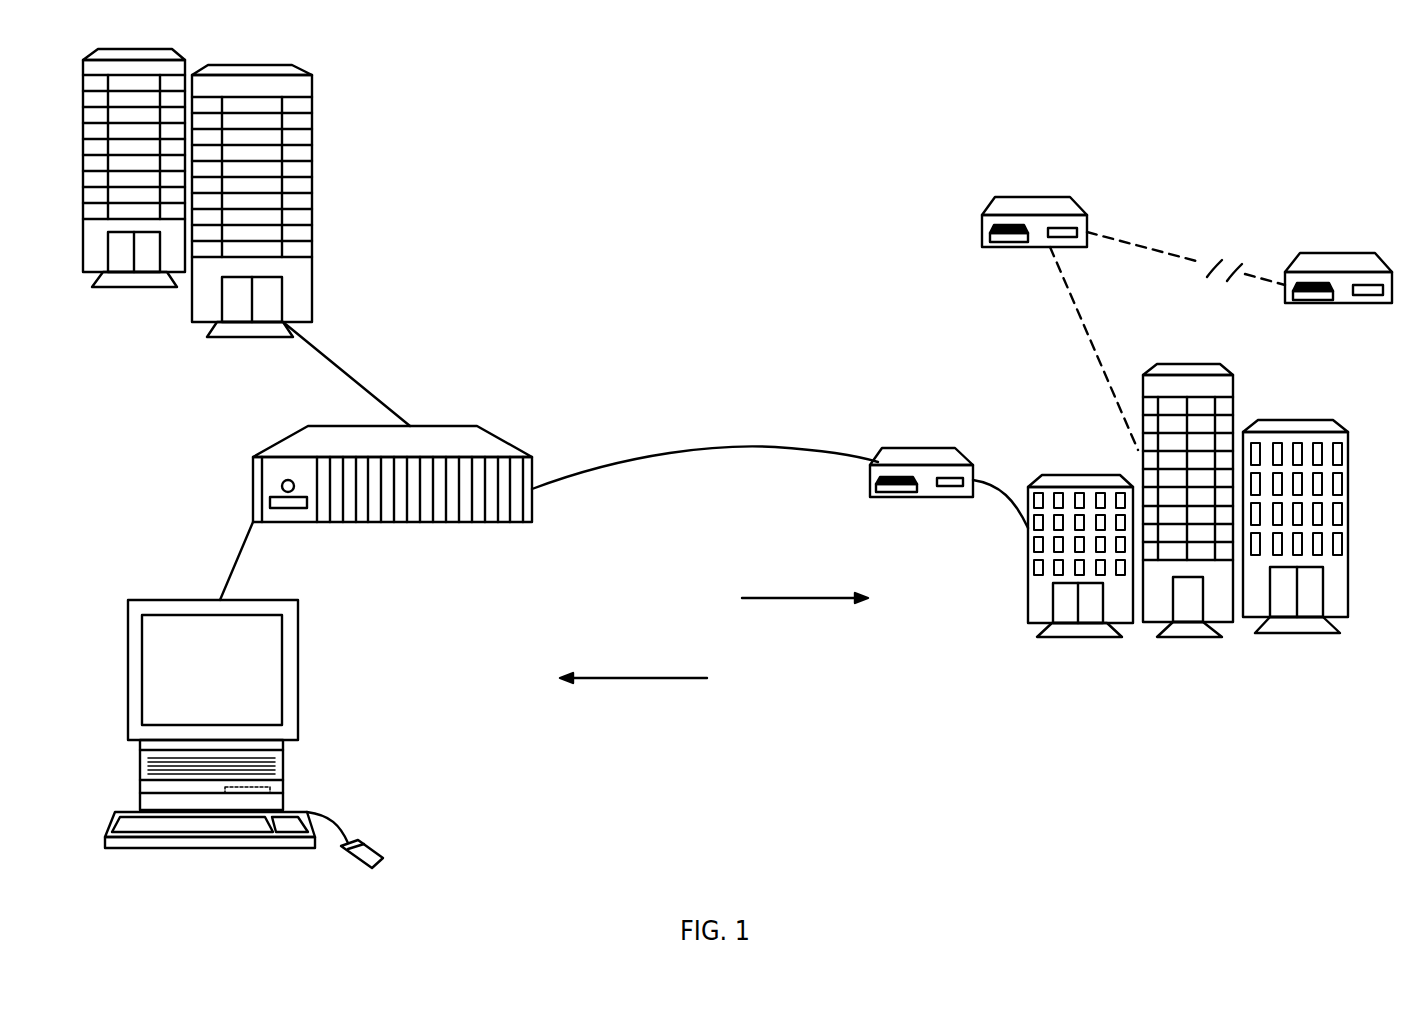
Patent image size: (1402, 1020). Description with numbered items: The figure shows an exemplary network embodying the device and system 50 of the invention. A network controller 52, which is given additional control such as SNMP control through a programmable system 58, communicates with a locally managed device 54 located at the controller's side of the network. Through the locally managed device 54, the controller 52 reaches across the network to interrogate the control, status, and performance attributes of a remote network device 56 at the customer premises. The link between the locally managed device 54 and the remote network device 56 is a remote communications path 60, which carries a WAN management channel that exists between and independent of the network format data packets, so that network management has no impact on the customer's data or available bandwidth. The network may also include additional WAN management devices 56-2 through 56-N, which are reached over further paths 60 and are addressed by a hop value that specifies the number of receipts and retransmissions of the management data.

The device and system 50 is at (1056, 792).
The network controller 52 is at (262, 513).
The locally managed device 54 is at (390, 503).
The remote network device 56 is at (905, 498).
The additional WAN management device 56-2 is at (982, 232).
The additional WAN management device 56-N is at (1303, 305).
The programmable system 58 is at (283, 775).
The remote communications path 60 is at (350, 372).